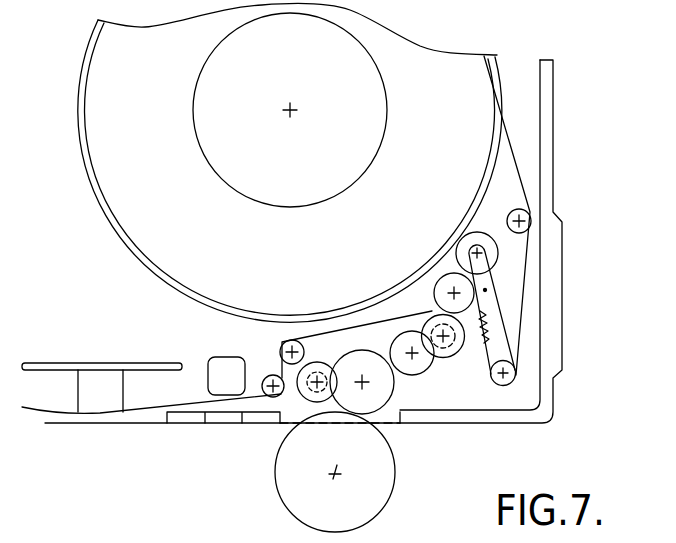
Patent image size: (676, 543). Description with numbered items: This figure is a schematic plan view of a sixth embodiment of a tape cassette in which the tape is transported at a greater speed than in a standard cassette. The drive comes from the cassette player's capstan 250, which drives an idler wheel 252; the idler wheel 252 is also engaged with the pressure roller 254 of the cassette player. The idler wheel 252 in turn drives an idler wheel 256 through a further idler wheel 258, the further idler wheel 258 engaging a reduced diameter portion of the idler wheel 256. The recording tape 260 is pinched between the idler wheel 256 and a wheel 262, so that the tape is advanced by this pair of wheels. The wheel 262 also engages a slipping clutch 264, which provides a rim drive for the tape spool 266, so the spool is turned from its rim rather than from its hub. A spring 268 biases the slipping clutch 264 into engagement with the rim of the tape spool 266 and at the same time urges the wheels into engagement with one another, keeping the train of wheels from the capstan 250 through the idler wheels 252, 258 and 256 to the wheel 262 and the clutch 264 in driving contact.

The capstan 250 is at (305, 395).
The idler wheel 252 is at (386, 403).
The pressure roller 254 is at (295, 488).
The idler wheel 256 is at (458, 351).
The further idler wheel 258 is at (427, 370).
The recording tape 260 is at (150, 410).
The wheel 262 is at (438, 281).
The slipping clutch 264 is at (465, 236).
The tape spool 266 is at (495, 175).
The spring 268 is at (487, 327).